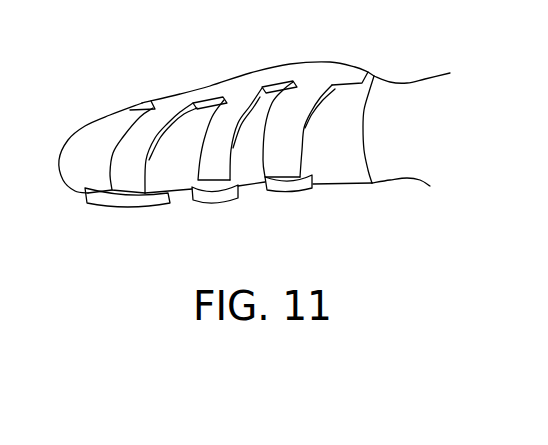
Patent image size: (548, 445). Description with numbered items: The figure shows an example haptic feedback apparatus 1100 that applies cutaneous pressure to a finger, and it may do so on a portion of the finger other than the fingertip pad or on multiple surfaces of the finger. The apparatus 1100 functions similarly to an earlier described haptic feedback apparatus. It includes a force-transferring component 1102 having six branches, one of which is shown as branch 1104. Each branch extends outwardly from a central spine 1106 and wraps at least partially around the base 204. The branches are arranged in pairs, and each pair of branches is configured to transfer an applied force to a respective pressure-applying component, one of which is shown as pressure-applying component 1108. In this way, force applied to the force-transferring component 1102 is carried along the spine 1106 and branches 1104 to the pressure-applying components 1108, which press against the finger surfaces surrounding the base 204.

The haptic feedback apparatus 1100 is at (254, 125).
The force-transferring component 1102 is at (267, 63).
The branch 1104 is at (290, 130).
The central spine 1106 is at (247, 87).
The pressure-applying component 1108 is at (291, 194).
The base 204 is at (350, 183).